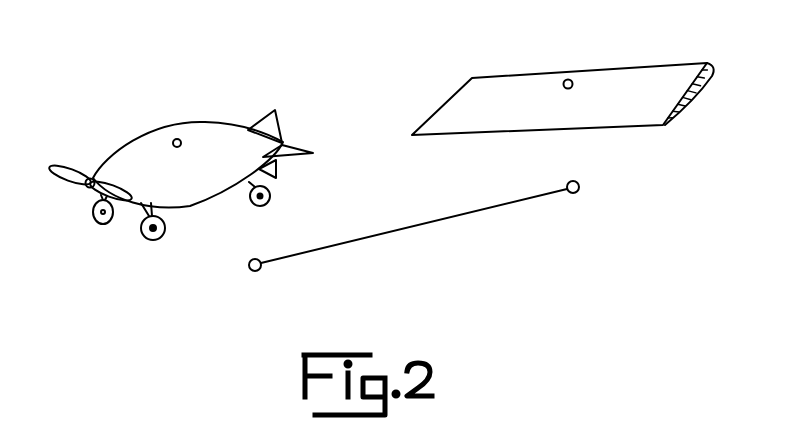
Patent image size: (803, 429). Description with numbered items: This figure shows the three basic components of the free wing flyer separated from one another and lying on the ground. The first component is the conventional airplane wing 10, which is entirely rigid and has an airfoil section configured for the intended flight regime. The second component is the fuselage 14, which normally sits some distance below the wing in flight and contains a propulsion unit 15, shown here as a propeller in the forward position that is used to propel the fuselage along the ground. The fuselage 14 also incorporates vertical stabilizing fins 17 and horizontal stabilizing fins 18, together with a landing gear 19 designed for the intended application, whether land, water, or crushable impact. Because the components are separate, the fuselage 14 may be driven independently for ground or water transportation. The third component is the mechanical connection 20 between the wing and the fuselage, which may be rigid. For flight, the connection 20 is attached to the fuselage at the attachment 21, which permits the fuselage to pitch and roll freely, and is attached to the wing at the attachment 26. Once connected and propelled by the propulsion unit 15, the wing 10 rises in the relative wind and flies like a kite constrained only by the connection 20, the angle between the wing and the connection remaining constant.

The airplane wing 10 is at (515, 82).
The fuselage 14 is at (148, 140).
The propulsion unit 15 is at (83, 191).
The vertical stabilizing fins 17 is at (283, 121).
The horizontal stabilizing fins 18 is at (304, 150).
The landing gear 19 is at (153, 241).
The mechanical connection 20 is at (422, 223).
The attachment 21 is at (181, 143).
The attachment 26 is at (572, 85).